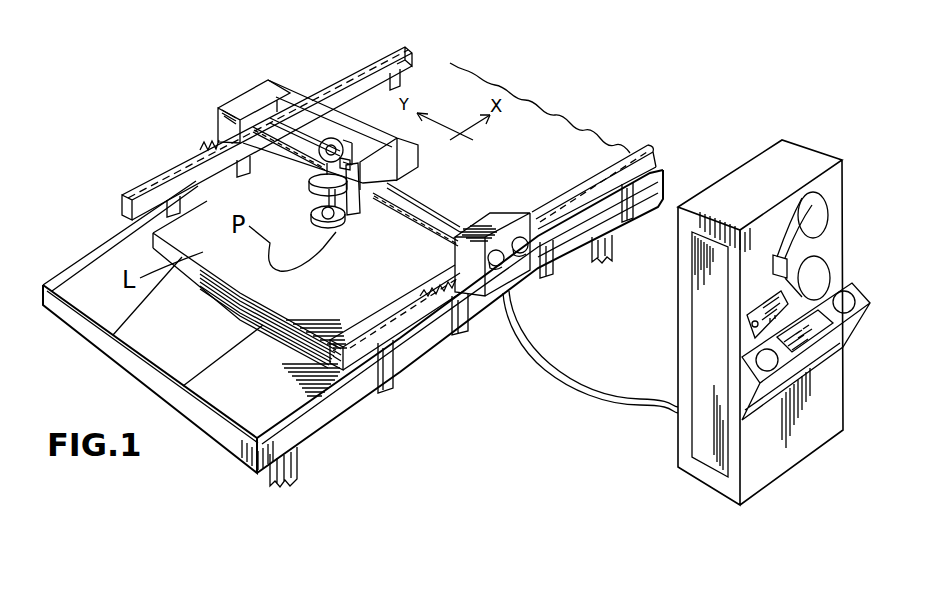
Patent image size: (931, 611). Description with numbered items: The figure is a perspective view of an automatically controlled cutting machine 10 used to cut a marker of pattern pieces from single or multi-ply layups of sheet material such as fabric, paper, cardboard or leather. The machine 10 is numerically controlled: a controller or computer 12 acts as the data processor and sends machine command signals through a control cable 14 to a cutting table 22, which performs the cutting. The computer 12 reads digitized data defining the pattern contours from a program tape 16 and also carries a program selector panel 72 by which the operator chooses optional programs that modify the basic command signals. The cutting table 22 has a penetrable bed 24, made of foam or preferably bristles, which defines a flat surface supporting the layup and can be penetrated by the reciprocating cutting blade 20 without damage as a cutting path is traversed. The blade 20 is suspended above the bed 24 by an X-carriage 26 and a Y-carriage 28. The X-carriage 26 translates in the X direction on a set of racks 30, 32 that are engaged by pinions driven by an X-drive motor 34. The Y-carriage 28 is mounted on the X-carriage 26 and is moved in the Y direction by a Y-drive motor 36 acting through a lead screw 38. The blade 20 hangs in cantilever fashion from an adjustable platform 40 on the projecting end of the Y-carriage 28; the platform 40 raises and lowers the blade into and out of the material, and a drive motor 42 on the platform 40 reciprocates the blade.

The automatically controlled cutting machine 10 is at (614, 111).
The controller or computer 12 is at (773, 155).
The control cable 14 is at (553, 368).
The program tape 16 is at (824, 218).
The reciprocating cutting blade 20 is at (313, 208).
The cutting table 22 is at (102, 342).
The penetrable bed 24 is at (247, 398).
The X-carriage 26 is at (507, 213).
The Y-carriage 28 is at (423, 147).
The rack 30 is at (652, 156).
The rack 32 is at (413, 60).
The X-drive motor 34 is at (523, 255).
The Y-drive motor 36 is at (498, 270).
The lead screw 38 is at (417, 226).
The adjustable platform 40 is at (312, 182).
The drive motor 42 is at (350, 132).
The program selector panel 72 is at (751, 313).